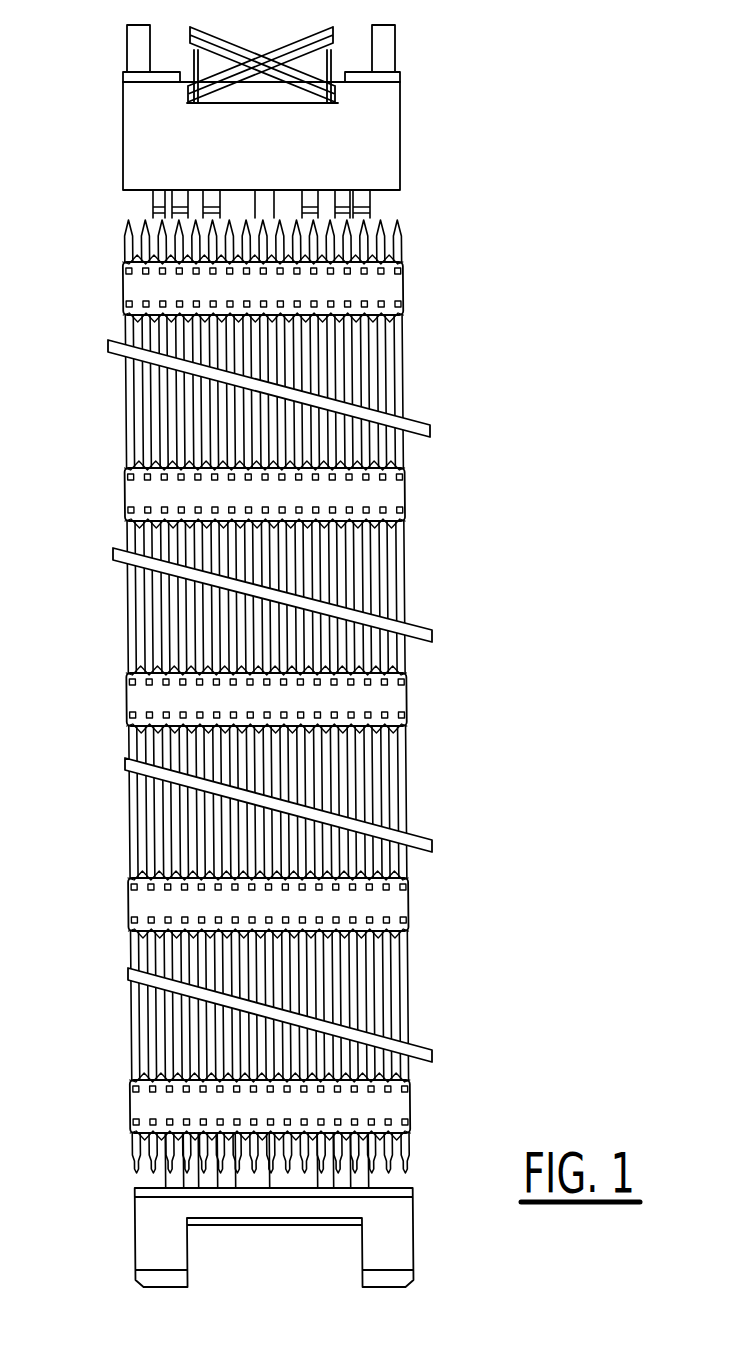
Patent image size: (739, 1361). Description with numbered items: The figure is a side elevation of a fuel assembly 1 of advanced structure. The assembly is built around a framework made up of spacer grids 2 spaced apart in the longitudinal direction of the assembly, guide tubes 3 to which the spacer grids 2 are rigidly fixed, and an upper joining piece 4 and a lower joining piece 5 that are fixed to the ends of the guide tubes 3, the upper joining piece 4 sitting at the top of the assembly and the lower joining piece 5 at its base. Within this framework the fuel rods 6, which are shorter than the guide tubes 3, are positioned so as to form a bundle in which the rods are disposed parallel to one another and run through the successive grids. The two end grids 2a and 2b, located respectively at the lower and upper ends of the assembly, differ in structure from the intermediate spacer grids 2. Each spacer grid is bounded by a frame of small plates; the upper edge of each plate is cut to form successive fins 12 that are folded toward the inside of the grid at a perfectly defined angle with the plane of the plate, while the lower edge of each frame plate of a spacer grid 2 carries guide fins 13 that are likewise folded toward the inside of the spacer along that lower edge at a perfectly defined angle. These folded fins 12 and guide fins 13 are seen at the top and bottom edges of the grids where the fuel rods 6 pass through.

The fuel assembly 1 is at (283, 656).
The spacer grids 2 is at (140, 496).
The end grid 2a is at (160, 1108).
The end grid 2b is at (380, 283).
The guide tubes 3 is at (210, 192).
The upper joining piece 4 is at (375, 137).
The lower joining piece 5 is at (160, 1226).
The fuel rods 6 is at (383, 433).
The fins 12 is at (145, 668).
The guide fins 13 is at (405, 945).